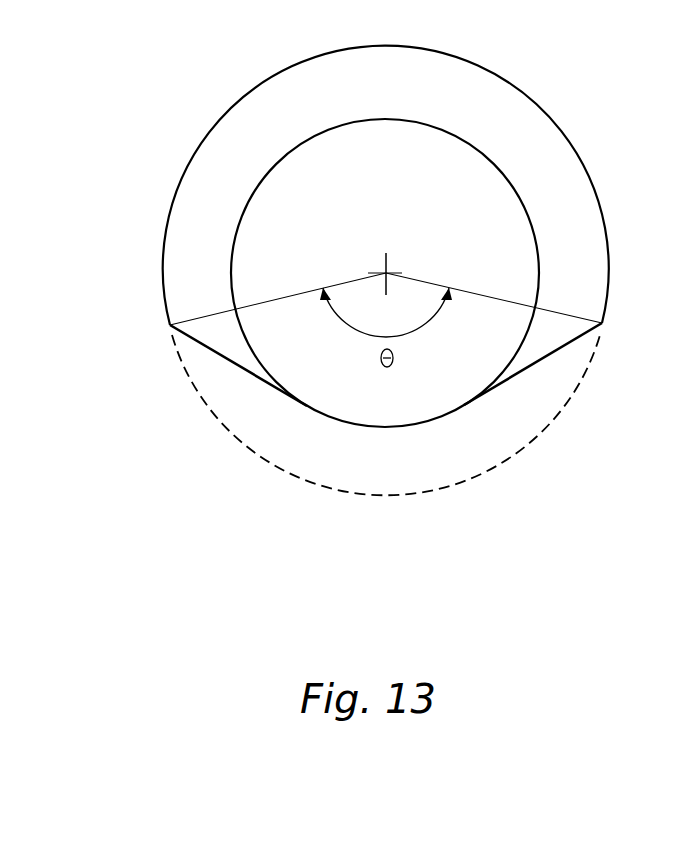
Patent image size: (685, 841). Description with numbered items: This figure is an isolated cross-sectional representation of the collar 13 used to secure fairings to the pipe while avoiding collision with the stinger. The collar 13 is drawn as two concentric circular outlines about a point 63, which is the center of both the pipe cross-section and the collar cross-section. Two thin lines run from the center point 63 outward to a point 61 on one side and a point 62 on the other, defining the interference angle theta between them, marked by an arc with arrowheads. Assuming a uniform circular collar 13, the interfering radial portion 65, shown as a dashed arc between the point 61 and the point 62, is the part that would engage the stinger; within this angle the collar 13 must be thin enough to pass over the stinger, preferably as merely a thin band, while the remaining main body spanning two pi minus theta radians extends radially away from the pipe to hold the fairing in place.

The collar 13 is at (523, 93).
The point 61 is at (170, 325).
The point 62 is at (602, 323).
The point 63 is at (388, 270).
The interfering radial portion 65 is at (512, 460).